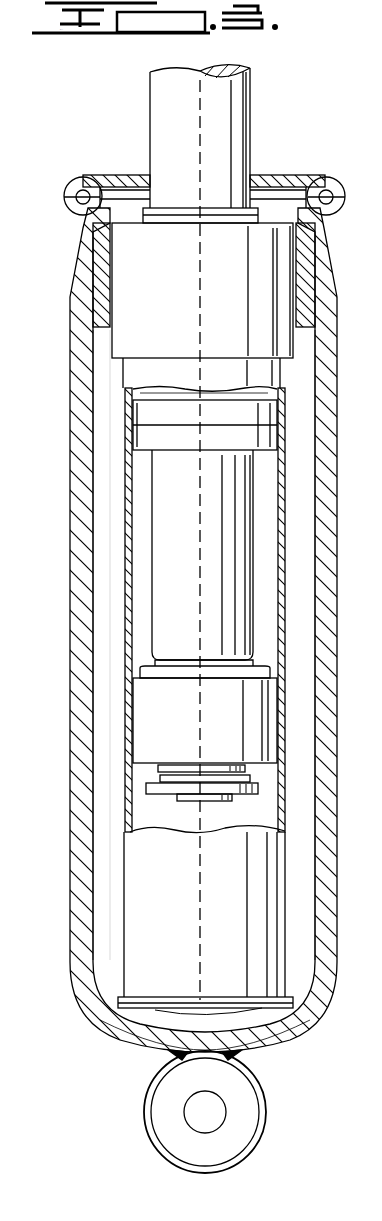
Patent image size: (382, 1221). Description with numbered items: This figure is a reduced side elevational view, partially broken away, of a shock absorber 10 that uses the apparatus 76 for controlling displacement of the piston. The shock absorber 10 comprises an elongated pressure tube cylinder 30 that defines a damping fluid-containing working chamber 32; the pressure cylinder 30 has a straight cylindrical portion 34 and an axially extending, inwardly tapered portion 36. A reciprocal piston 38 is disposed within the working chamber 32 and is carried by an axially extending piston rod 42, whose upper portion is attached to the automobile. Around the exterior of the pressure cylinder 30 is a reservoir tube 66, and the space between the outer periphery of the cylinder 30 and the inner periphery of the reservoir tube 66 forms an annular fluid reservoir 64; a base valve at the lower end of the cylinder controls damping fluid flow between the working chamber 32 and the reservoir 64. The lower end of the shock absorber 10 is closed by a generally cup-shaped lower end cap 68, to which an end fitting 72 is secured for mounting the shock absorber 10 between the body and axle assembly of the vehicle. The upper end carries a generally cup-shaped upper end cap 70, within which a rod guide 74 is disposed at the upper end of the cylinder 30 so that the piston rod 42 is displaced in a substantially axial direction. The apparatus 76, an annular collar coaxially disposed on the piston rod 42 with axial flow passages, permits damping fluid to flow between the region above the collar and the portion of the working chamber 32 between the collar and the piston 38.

The shock absorber 10 is at (318, 77).
The pressure tube cylinder 30 is at (125, 602).
The working chamber 32 is at (145, 813).
The straight cylindrical portion 34 is at (125, 773).
The inwardly tapered portion 36 is at (115, 525).
The reciprocal piston 38 is at (140, 712).
The piston rod 42 is at (163, 478).
The annular fluid reservoir 64 is at (105, 642).
The reservoir tube 66 is at (78, 573).
The lower end cap 68 is at (143, 1027).
The upper end cap 70 is at (103, 240).
The end fitting 72 is at (165, 1105).
The rod guide 74 is at (140, 268).
The apparatus for controlling displacement of the piston 76 is at (147, 412).